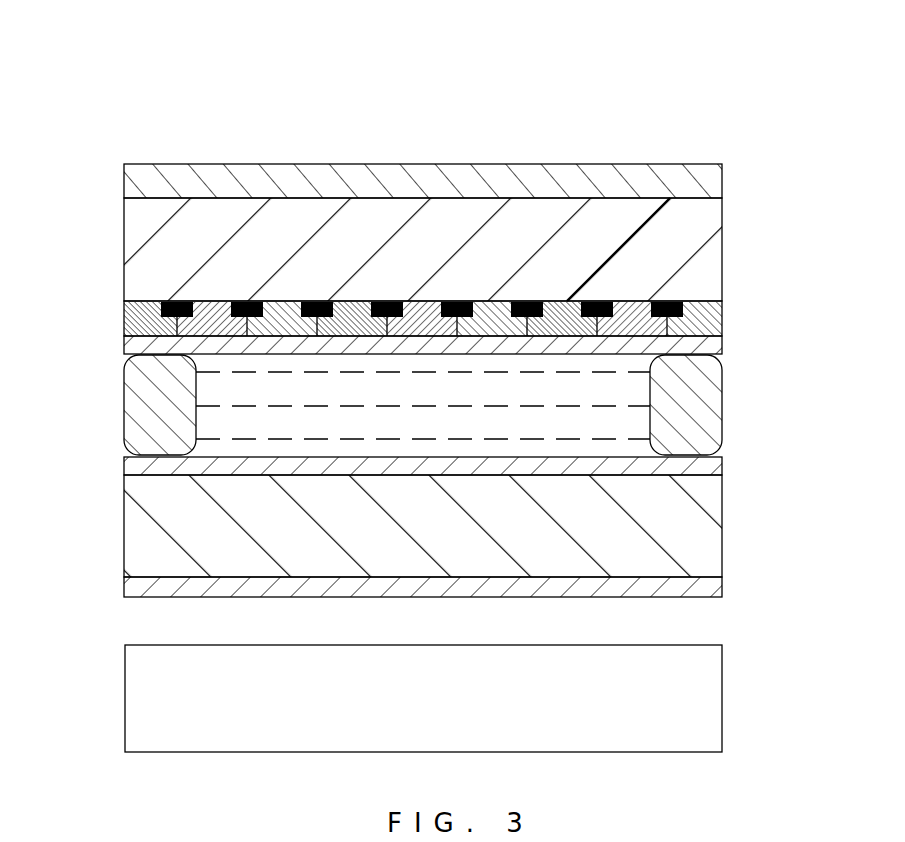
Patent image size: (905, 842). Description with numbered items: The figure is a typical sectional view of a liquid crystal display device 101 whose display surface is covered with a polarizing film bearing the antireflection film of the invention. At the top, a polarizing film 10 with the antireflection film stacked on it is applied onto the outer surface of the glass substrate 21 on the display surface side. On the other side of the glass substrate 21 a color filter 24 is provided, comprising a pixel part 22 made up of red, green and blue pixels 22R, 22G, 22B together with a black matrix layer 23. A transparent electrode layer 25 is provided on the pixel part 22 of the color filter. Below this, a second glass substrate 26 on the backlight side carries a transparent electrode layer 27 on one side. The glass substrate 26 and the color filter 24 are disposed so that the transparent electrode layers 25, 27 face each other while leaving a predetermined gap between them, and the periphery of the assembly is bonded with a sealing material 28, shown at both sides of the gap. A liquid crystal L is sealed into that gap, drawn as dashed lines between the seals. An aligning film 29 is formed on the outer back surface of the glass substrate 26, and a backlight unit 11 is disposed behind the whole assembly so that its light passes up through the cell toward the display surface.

The liquid crystal display device 101 is at (438, 135).
The polarizing film 10 is at (665, 165).
The glass substrate 21 is at (670, 238).
The pixel part 22 is at (723, 308).
The red pixel 22R is at (133, 328).
The green pixel 22G is at (203, 302).
The blue pixel 22B is at (265, 302).
The black matrix layer 23 is at (667, 290).
The color filter 24 is at (448, 270).
The transparent electrode layer 25 is at (668, 343).
The sealing material 28 is at (668, 399).
The liquid crystal L is at (227, 397).
The transparent electrode layer 27 is at (668, 462).
The glass substrate 26 is at (668, 520).
The aligning film 29 is at (668, 583).
The backlight unit 11 is at (668, 700).